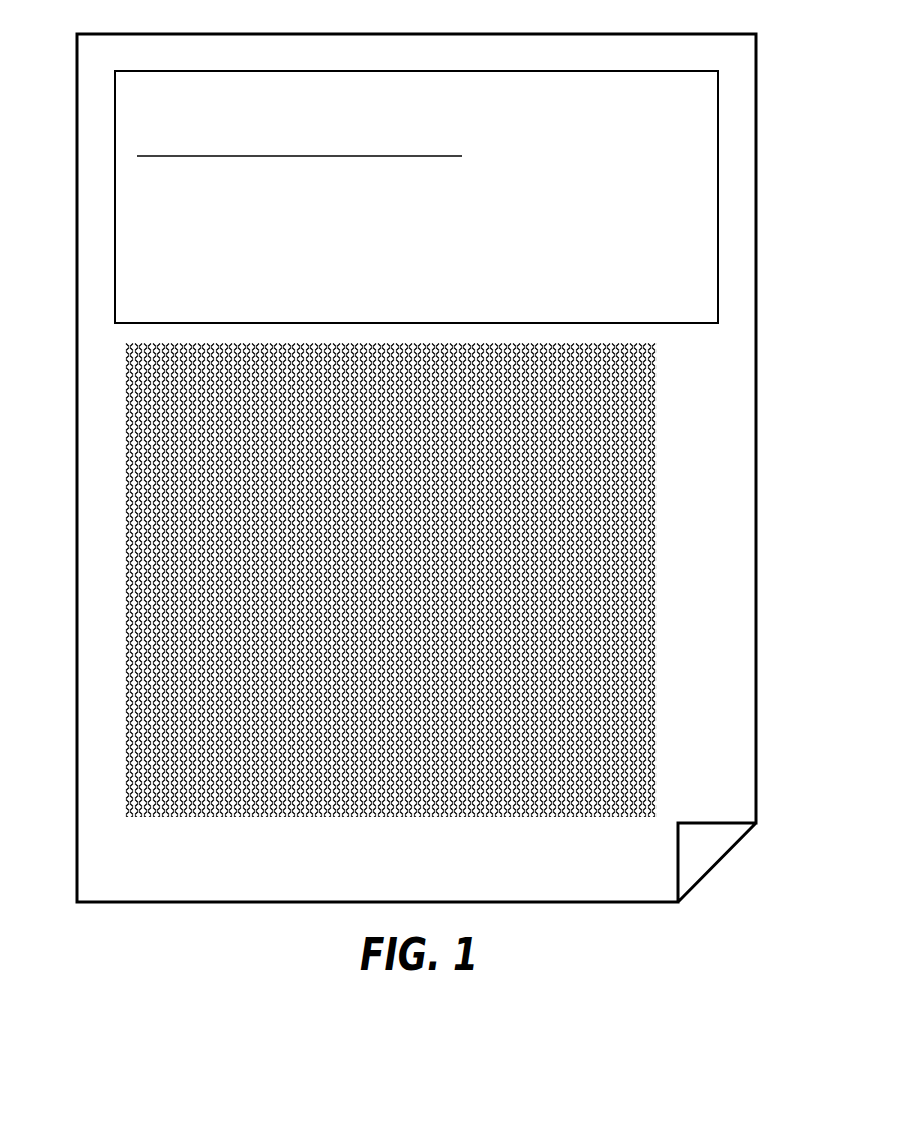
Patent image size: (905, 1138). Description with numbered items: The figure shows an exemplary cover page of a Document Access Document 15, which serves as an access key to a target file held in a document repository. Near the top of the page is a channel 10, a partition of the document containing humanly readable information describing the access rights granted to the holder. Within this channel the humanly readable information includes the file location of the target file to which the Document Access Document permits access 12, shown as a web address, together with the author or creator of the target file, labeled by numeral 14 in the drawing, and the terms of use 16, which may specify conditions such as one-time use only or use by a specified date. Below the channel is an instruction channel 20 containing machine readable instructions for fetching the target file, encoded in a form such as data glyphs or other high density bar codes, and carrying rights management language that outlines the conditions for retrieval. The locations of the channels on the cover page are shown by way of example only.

The Document Access Document 15 is at (608, 33).
The channel 10 is at (718, 193).
The file location of the target file 12 is at (136, 146).
The creator information 14 is at (136, 200).
The terms of use 16 is at (136, 284).
The instruction channel 20 is at (699, 512).